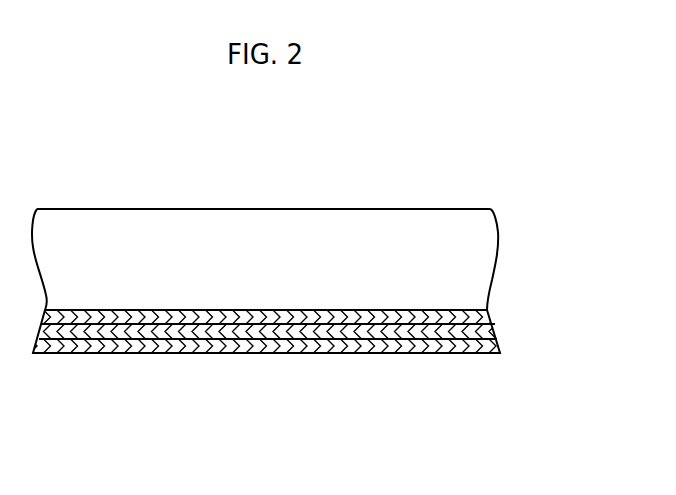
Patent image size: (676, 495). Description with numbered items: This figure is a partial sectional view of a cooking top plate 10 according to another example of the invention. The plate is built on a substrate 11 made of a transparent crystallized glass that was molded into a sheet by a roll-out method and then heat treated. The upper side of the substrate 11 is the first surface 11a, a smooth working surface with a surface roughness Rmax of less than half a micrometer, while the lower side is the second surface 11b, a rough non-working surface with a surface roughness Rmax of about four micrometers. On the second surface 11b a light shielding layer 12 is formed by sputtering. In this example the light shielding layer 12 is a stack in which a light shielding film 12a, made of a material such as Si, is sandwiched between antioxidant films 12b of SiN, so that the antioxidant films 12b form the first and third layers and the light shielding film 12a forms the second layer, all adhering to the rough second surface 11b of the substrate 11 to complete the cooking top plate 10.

The cooking top plate 10 is at (507, 210).
The substrate 11 is at (212, 247).
The first surface 11a is at (148, 208).
The second surface 11b is at (199, 309).
The light shielding layer 12 is at (491, 310).
The light shielding film 12a is at (115, 340).
The antioxidant film 12b is at (302, 348).